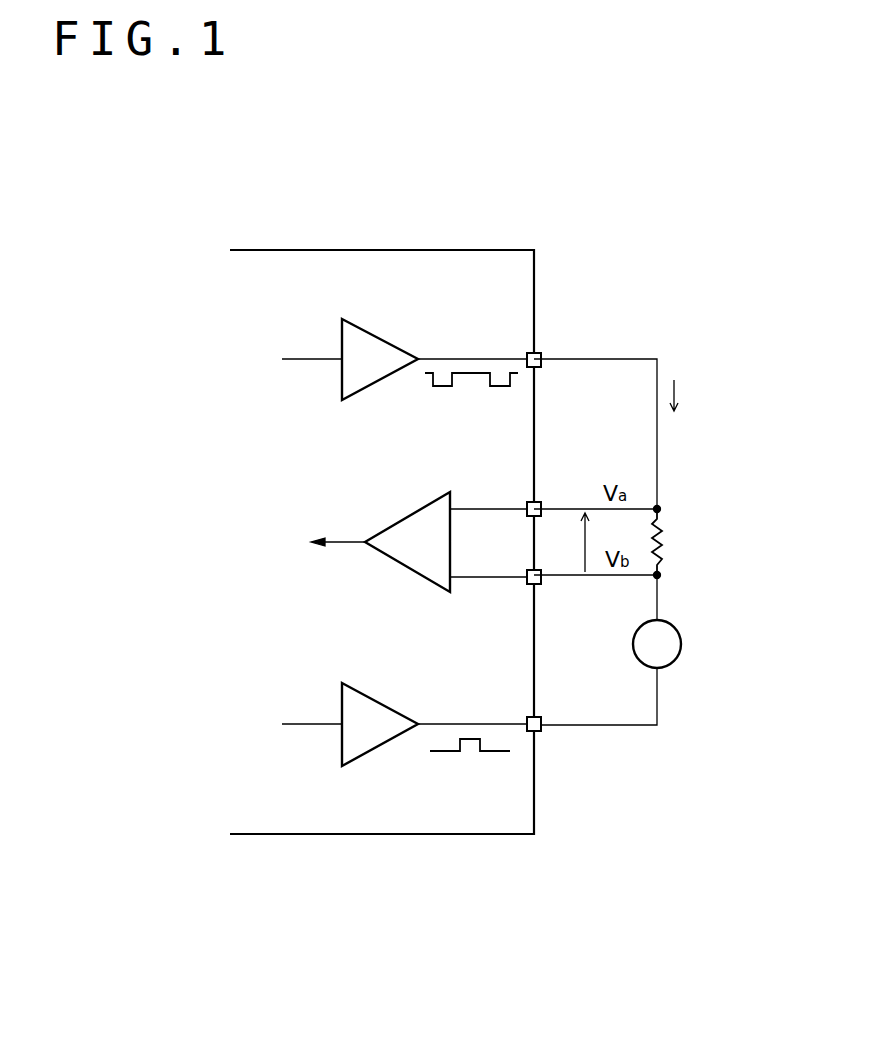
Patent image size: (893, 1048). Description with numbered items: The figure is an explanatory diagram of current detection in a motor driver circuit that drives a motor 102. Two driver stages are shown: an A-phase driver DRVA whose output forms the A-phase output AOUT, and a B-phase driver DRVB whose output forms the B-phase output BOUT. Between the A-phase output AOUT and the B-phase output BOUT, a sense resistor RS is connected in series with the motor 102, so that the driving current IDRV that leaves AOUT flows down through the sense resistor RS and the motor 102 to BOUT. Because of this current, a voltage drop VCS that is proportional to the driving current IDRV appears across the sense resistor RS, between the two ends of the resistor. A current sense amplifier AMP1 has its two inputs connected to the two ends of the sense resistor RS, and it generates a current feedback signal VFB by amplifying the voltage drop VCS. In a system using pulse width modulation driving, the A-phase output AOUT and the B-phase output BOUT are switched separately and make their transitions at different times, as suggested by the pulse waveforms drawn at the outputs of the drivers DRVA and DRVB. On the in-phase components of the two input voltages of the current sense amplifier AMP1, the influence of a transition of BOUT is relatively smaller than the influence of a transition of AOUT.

The linear motor 102 is at (677, 659).
The A-phase driver DRVA is at (388, 335).
The B-phase driver DRVB is at (378, 745).
The current sense amplifier AMP1 is at (408, 573).
The sense resistor RS is at (674, 542).
The A-phase output AOUT is at (566, 348).
The B-phase output BOUT is at (566, 735).
The current feedback signal VFB is at (334, 525).
The voltage drop VCS is at (566, 542).
The driving current IDRV is at (699, 396).